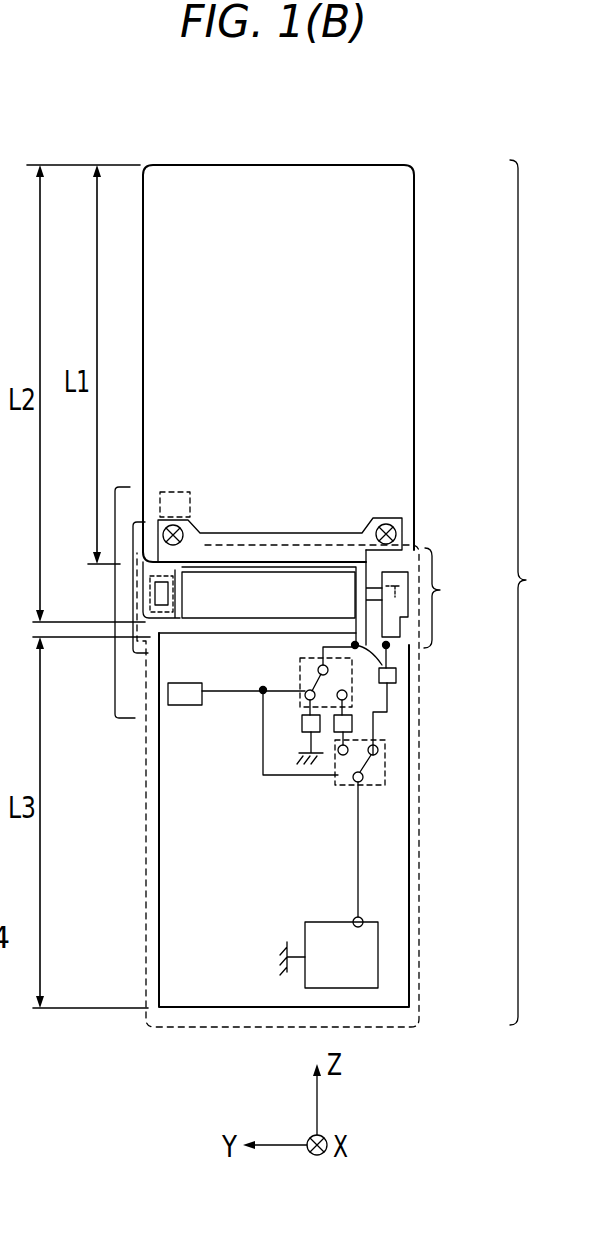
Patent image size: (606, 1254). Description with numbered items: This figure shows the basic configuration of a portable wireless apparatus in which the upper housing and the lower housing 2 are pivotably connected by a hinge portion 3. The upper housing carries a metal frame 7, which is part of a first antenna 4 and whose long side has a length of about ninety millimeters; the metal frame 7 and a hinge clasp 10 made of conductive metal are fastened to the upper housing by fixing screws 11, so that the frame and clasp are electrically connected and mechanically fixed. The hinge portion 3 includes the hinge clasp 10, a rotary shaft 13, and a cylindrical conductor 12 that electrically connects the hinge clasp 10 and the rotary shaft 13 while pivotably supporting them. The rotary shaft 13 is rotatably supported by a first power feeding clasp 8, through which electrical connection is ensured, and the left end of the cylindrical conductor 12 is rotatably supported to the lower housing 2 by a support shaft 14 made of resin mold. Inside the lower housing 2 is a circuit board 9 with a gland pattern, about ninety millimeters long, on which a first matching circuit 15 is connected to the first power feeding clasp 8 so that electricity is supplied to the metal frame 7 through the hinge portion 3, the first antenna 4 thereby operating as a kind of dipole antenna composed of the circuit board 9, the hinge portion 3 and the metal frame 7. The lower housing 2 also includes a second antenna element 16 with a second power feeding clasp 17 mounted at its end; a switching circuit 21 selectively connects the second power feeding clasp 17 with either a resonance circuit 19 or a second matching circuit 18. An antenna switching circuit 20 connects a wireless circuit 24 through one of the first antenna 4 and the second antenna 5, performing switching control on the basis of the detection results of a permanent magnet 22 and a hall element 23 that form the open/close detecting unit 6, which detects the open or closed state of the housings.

The lower housing 2 is at (403, 1022).
The hinge portion 3 is at (133, 592).
The first antenna 4 is at (528, 592).
The second antenna 5 is at (440, 590).
The open/close detecting unit 6 is at (112, 610).
The metal frame 7 is at (378, 243).
The first power feeding clasp 8 is at (402, 628).
The circuit board 9 is at (397, 910).
The hinge clasp 10 is at (306, 532).
The fixing screws 11 is at (402, 528).
The cylindrical conductor 12 is at (307, 603).
The rotary shaft 13 is at (408, 600).
The support shaft 14 is at (180, 576).
The first matching circuit 15 is at (396, 680).
The second antenna element 16 is at (262, 563).
The second power feeding clasp 17 is at (396, 672).
The second matching circuit 18 is at (353, 725).
The resonance circuit 19 is at (300, 672).
The antenna switching circuit 20 is at (385, 780).
The switching circuit 21 is at (302, 724).
The permanent magnet 22 is at (173, 492).
The hall element 23 is at (188, 703).
The wireless circuit 24 is at (330, 922).